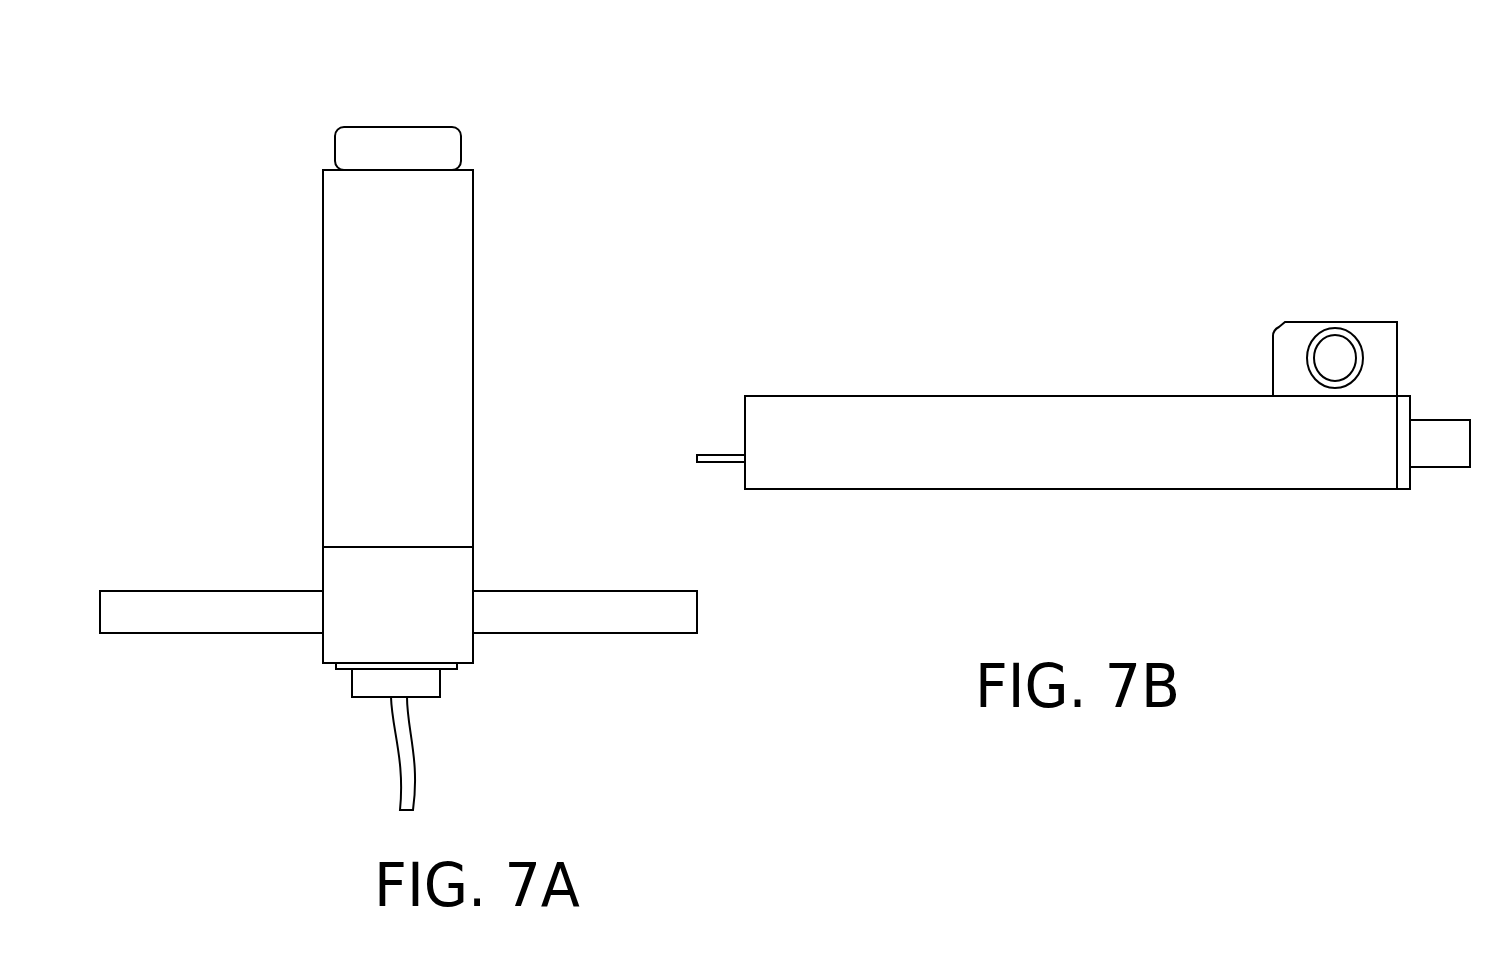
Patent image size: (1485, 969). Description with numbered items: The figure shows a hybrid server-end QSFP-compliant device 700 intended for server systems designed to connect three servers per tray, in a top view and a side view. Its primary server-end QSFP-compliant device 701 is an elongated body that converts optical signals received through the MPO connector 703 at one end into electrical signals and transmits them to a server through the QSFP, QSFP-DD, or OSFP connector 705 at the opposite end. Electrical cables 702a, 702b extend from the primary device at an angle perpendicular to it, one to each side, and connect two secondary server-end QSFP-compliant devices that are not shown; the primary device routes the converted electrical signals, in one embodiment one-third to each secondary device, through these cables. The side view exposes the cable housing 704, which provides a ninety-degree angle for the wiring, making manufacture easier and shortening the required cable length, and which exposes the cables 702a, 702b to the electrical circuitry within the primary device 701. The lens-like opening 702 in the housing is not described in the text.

In FIG. 7A, the hybrid server-end QSFP-compliant device 700 is at (236, 104).
In FIG. 7B, the hybrid server-end QSFP-compliant device 700 is at (862, 226).
In FIG. 7A, the primary server-end QSFP-compliant device 701 is at (473, 333).
In FIG. 7B, the primary server-end QSFP-compliant device 701 is at (1115, 489).
In FIG. 7B, the camera lens 702 is at (1313, 389).
In FIG. 7A, the electrical cable 702a is at (162, 625).
In FIG. 7A, the electrical cable 702b is at (596, 625).
In FIG. 7A, the MPO connector 703 is at (420, 755).
In FIG. 7B, the MPO connector 703 is at (1437, 471).
In FIG. 7A, the cable housing 704 is at (398, 608).
In FIG. 7B, the cable housing 704 is at (1373, 322).
In FIG. 7A, the QSFP, QSFP-DD, or OSFP connector 705 is at (461, 145).
In FIG. 7B, the QSFP, QSFP-DD, or OSFP connector 705 is at (707, 455).